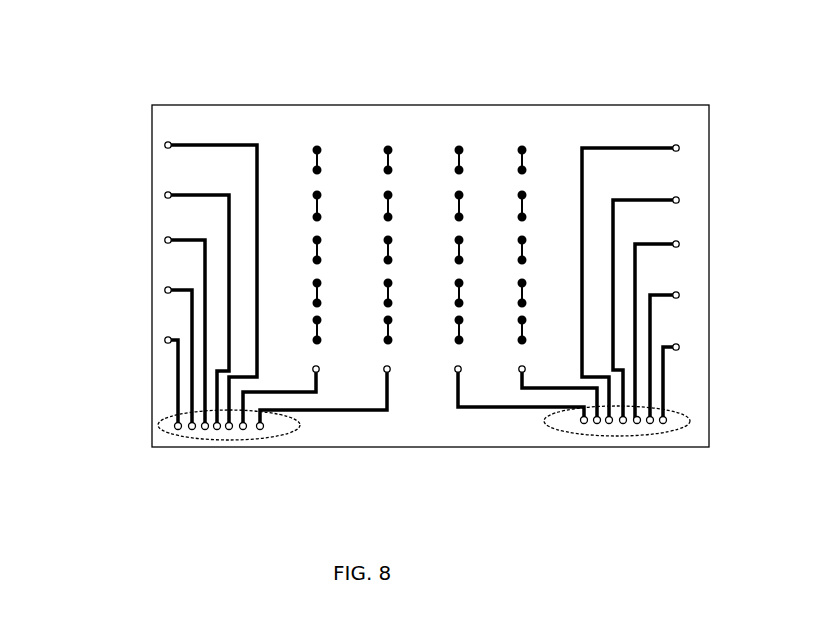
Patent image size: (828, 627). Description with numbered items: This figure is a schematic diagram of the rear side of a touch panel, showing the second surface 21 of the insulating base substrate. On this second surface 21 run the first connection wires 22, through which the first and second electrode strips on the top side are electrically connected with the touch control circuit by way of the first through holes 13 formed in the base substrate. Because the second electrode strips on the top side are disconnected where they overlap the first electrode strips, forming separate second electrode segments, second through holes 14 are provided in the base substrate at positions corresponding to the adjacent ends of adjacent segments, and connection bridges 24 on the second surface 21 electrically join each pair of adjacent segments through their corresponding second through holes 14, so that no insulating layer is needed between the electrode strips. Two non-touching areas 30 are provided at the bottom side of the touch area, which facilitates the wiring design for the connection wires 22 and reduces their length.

The first through hole 13 is at (165, 344).
The second through hole 14 is at (314, 149).
The second surface 21 is at (407, 105).
The first connection wire 22 is at (615, 147).
The connection bridge 24 is at (386, 149).
The non-touching area 30 is at (424, 468).